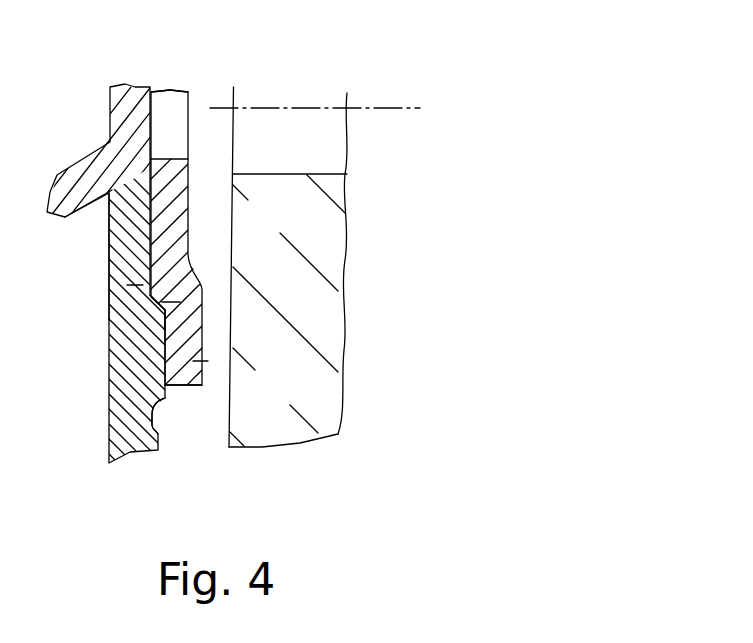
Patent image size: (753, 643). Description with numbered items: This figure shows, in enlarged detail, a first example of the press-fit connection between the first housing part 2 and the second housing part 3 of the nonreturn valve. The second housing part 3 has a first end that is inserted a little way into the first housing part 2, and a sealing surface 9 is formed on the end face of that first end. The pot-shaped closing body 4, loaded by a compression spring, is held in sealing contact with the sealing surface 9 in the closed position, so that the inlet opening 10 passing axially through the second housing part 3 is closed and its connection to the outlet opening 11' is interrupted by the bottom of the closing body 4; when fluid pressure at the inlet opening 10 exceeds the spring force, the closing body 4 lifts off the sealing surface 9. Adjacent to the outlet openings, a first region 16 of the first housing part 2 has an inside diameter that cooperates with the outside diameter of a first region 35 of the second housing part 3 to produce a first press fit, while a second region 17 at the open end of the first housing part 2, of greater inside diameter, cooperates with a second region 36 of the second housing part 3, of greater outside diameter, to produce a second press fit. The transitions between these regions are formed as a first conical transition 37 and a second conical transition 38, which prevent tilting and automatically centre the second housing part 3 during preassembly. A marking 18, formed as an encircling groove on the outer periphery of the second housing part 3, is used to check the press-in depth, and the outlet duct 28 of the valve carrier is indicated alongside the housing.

The first housing part 2 is at (216, 300).
The second housing part 3 is at (100, 428).
The closing body 4 is at (122, 107).
The sealing surface 9 is at (115, 198).
The inlet opening 10 is at (94, 303).
The outlet opening 11' is at (209, 72).
The first region of the first housing part 16 is at (165, 185).
The second region of the first housing part 17 is at (193, 362).
The marking 18 is at (153, 408).
The outlet duct 28 is at (328, 123).
The first region of the second housing part 35 is at (110, 220).
The second region of the second housing part 36 is at (131, 372).
The first conical transition 37 is at (115, 324).
The second conical transition 38 is at (176, 302).